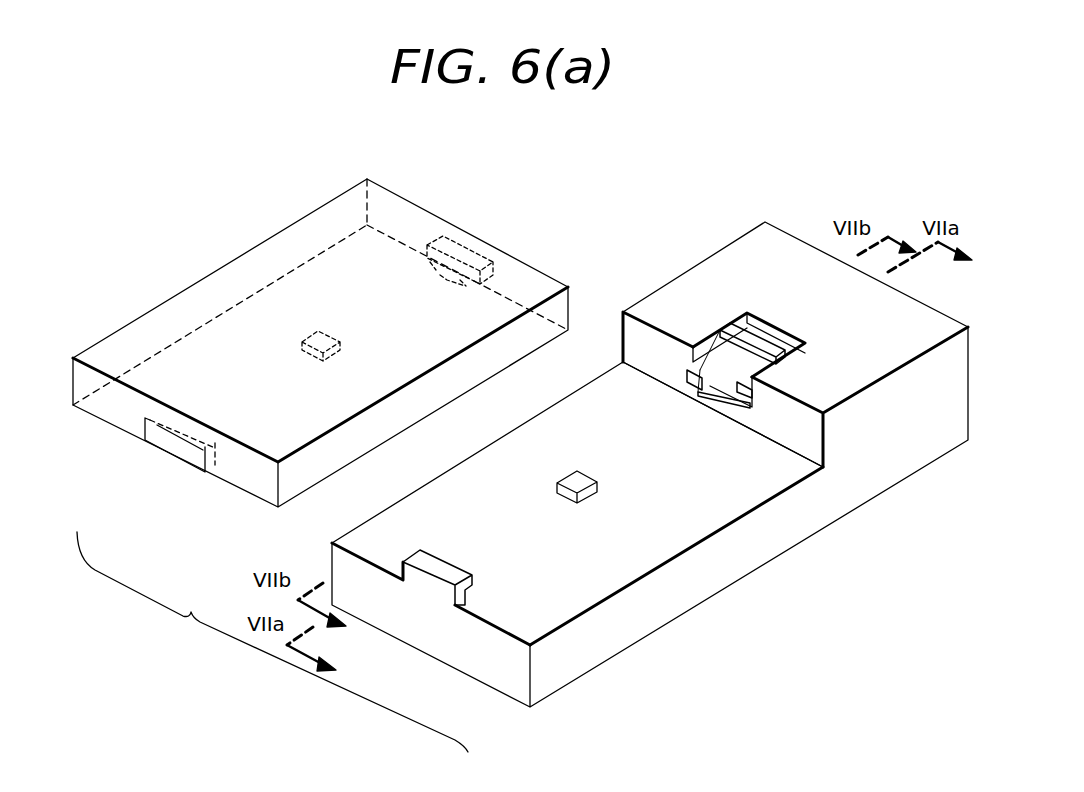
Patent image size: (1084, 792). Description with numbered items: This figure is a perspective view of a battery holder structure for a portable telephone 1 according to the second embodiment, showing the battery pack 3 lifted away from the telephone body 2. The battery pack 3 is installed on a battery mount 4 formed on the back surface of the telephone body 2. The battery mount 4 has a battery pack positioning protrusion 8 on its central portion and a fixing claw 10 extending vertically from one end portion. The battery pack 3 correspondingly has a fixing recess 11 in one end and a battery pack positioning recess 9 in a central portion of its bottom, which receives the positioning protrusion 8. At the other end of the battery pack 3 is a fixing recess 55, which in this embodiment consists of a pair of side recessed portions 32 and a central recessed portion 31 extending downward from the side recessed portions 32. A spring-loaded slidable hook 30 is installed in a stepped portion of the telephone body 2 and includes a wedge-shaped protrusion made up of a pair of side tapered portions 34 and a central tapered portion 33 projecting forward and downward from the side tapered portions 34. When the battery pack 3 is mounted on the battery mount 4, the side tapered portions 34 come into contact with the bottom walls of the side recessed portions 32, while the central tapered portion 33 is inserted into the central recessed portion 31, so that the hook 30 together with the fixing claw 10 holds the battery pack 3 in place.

The portable telephone 1 is at (272, 642).
The telephone body 2 is at (873, 482).
The battery pack 3 is at (323, 222).
The battery mount 4 is at (703, 503).
The battery pack positioning protrusion 8 is at (580, 482).
The battery pack positioning recess 9 is at (317, 332).
The fixing claw 10 is at (440, 568).
The fixing recess 11 is at (183, 445).
The slidable hook 30 is at (738, 355).
The central recessed portion 31 is at (447, 283).
The side recessed portions 32 is at (433, 267).
The central tapered portion 33 is at (710, 407).
The side tapered portions 34 is at (690, 372).
The fixing recess 55 is at (455, 248).